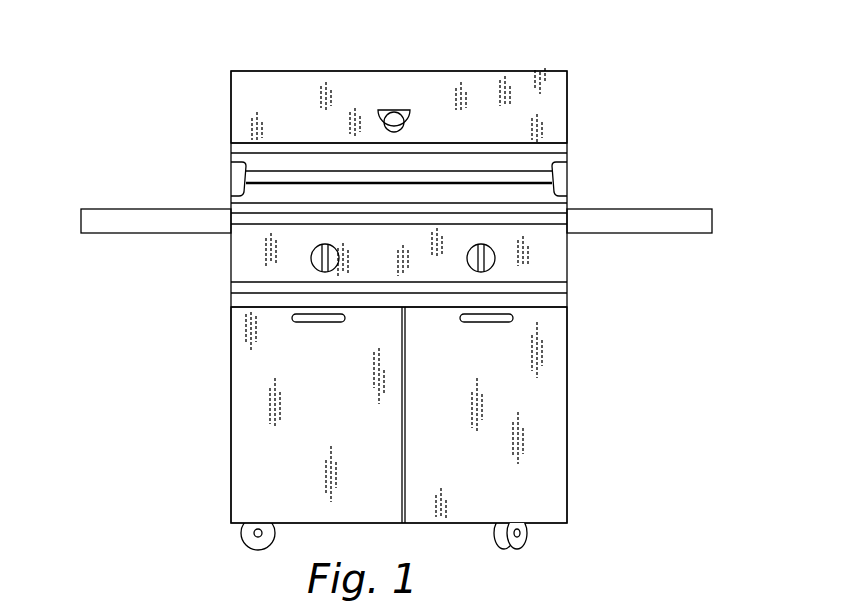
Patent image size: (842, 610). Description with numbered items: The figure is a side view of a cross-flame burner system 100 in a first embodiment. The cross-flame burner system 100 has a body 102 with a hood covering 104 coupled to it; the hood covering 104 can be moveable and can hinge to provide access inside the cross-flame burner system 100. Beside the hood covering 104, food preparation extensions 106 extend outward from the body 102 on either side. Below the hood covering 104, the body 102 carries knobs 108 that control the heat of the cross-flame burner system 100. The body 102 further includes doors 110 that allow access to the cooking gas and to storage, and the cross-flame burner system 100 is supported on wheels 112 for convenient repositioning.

The cross-flame burner system 100 is at (128, 68).
The body 102 is at (640, 283).
The hood covering 104 is at (481, 78).
The food preparation extensions 106 is at (686, 207).
The knobs 108 is at (310, 258).
The doors 110 is at (548, 432).
The wheels 112 is at (525, 537).